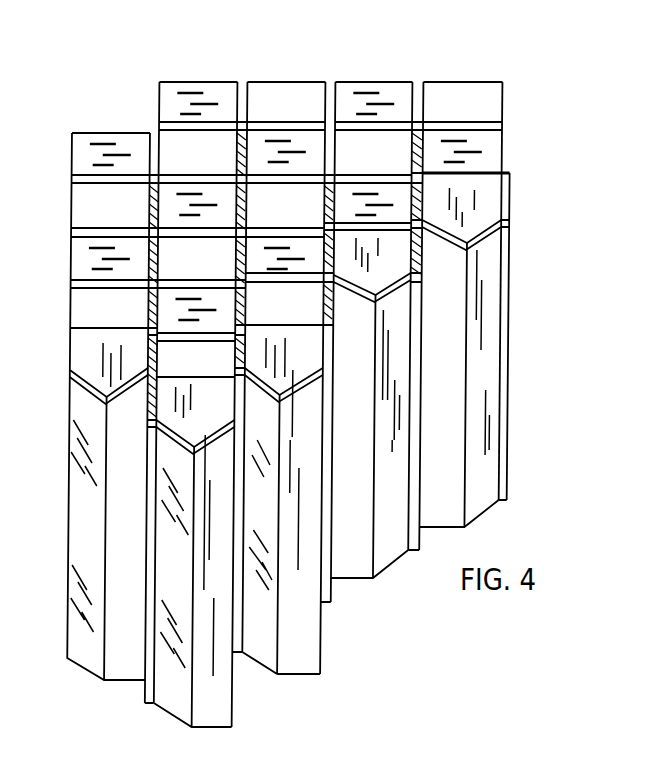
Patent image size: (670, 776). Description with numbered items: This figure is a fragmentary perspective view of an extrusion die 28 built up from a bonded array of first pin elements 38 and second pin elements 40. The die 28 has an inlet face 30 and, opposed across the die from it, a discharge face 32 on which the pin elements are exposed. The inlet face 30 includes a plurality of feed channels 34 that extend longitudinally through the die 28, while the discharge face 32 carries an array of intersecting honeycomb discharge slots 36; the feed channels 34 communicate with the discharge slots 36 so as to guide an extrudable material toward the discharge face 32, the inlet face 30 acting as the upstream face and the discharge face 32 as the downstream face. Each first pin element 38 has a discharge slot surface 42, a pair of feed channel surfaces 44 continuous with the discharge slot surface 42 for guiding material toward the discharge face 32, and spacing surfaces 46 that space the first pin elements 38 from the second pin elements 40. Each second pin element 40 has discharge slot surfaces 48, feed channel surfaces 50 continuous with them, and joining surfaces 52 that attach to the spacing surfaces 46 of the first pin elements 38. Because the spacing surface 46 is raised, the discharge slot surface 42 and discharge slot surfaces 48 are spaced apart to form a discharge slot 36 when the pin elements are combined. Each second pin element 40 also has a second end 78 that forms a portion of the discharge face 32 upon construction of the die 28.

The extrusion die 28 is at (333, 390).
The inlet face 30 is at (207, 733).
The discharge face 32 is at (458, 148).
The feed channels 34 is at (257, 685).
The discharge slots 36 is at (244, 76).
The first pin elements 38 is at (508, 141).
The second pin elements 40 is at (155, 333).
The discharge slot surface 42 is at (483, 197).
The feed channel surfaces 44 is at (498, 352).
The spacing surfaces 46 is at (457, 437).
The discharge slot surfaces 48 is at (97, 340).
The feed channel surfaces 50 is at (86, 652).
The joining surfaces 52 is at (303, 658).
The second end 78 is at (100, 300).